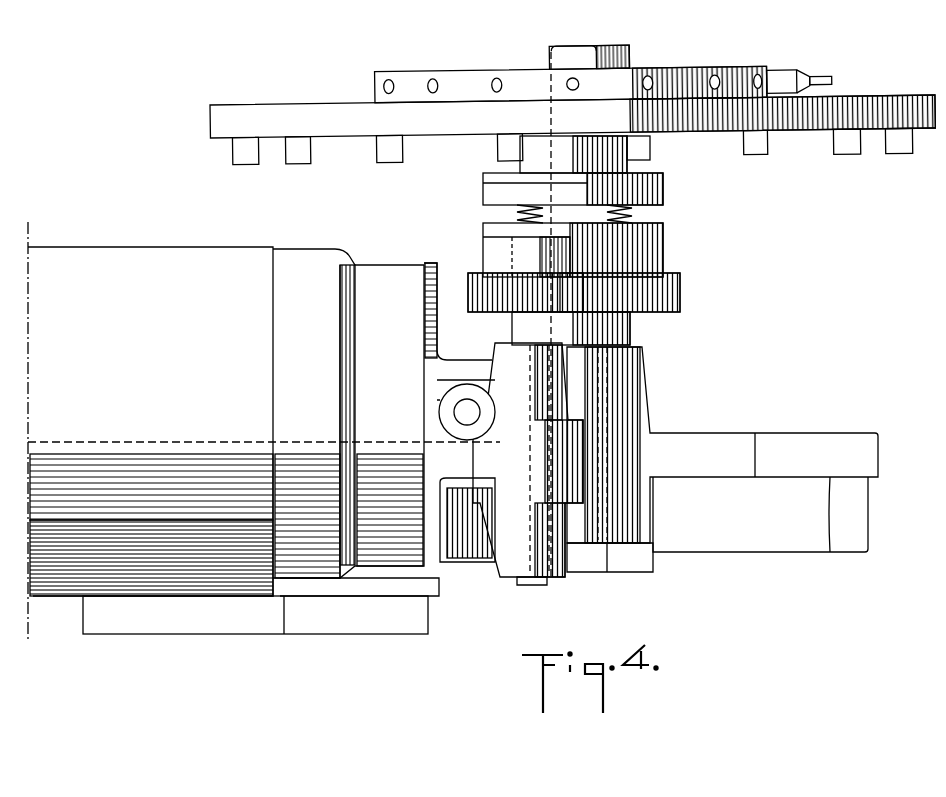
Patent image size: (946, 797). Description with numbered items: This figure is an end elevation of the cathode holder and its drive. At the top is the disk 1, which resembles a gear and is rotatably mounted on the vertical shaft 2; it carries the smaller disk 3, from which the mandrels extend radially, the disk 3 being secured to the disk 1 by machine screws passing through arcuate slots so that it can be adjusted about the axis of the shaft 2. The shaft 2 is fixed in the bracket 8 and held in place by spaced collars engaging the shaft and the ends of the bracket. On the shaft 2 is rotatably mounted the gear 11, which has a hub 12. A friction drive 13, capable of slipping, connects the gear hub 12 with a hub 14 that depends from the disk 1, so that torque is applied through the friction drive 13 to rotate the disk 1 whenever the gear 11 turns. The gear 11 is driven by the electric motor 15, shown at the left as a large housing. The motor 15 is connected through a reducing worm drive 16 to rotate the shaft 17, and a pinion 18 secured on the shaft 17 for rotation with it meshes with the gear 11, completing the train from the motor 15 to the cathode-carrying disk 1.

The disk 1 is at (878, 99).
The vertical shaft 2 is at (572, 52).
The disk of smaller diameter 3 is at (672, 72).
The bracket 8 is at (645, 381).
The gear 11 is at (681, 291).
The gear hub 12 is at (661, 247).
The friction drive 13 is at (679, 183).
The hub 14 is at (533, 164).
The electric motor 15 is at (78, 262).
The reducing worm drive 16 is at (590, 556).
The shaft 17 is at (523, 322).
The pinion 18 is at (468, 292).